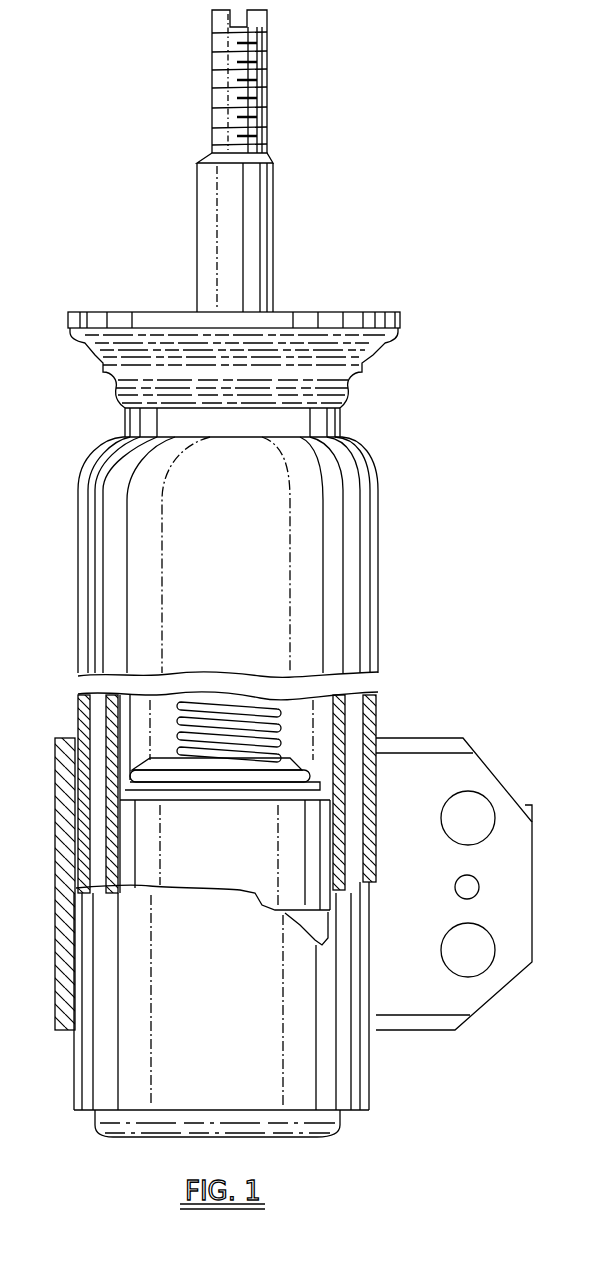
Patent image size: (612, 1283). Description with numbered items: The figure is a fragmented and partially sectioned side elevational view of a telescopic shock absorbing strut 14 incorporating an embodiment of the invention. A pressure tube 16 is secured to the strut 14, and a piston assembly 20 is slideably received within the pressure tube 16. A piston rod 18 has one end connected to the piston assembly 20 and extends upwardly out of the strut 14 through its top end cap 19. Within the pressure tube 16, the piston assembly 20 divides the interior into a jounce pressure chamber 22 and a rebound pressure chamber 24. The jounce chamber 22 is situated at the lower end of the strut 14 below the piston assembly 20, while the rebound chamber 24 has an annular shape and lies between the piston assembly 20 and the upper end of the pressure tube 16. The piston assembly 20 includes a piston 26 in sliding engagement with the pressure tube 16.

The telescopic shock absorbing strut 14 is at (368, 437).
The pressure tube 16 is at (342, 720).
The piston rod 18 is at (273, 240).
The top end cap 19 is at (370, 313).
The piston assembly 20 is at (343, 778).
The jounce pressure chamber 22 is at (305, 914).
The rebound pressure chamber 24 is at (300, 722).
The piston 26 is at (218, 852).